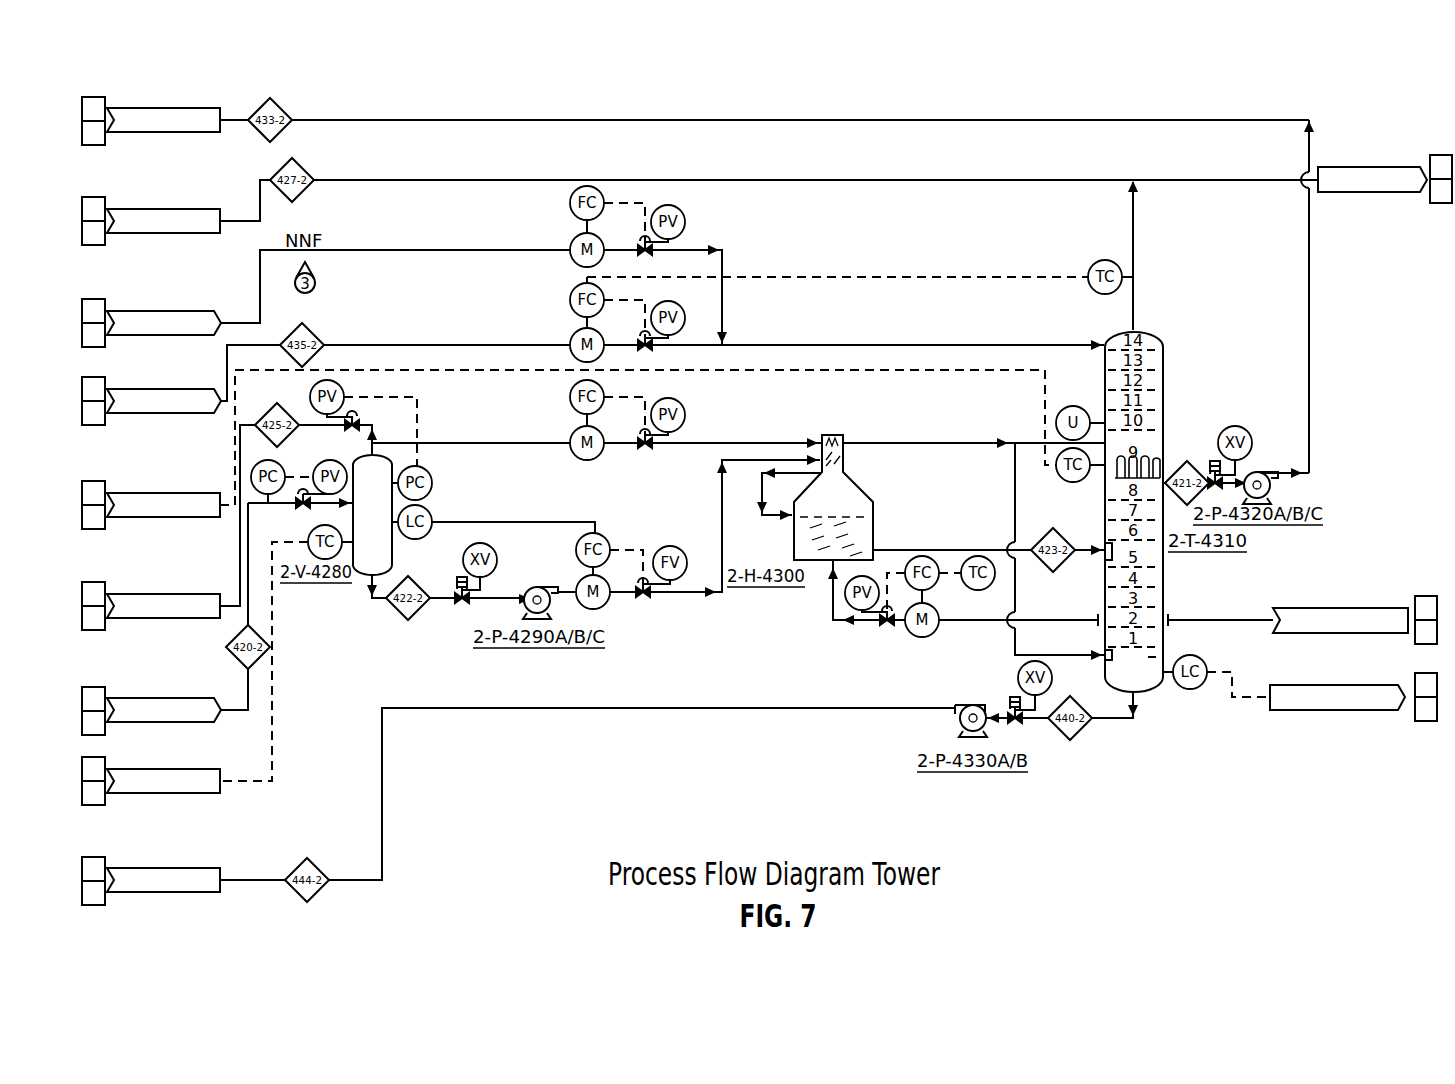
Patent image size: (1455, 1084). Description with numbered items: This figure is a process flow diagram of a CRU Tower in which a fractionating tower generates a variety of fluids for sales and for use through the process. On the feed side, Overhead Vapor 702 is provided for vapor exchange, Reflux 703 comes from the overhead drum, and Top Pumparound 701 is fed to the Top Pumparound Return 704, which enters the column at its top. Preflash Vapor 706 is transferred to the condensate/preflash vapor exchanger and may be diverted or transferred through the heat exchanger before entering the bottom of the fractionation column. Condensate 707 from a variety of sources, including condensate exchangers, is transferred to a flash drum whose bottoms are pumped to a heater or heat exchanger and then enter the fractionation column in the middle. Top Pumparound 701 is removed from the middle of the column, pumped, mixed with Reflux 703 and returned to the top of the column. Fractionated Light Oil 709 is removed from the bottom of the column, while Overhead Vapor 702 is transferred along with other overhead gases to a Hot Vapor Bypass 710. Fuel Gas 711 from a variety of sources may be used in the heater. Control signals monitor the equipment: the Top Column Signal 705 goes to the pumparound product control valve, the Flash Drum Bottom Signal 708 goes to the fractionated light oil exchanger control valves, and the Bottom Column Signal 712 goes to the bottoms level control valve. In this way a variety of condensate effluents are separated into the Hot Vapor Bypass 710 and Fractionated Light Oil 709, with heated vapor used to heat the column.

The Top Pumparound 701 is at (150, 100).
The Overhead Vapor 702 is at (161, 205).
The Reflux 703 is at (161, 307).
The Top Pumparound Return 704 is at (150, 382).
The Top Column Signal 705 is at (161, 490).
The Preflash Vapor 706 is at (161, 592).
The Condensate 707 is at (161, 695).
The Flash Drum Bottom Signal 708 is at (185, 762).
The Fractionated Light Oil 709 is at (161, 865).
The Hot Vapor Bypass 710 is at (1372, 165).
The Fuel Gas 711 is at (1345, 603).
The Bottom Column Signal 712 is at (1333, 677).